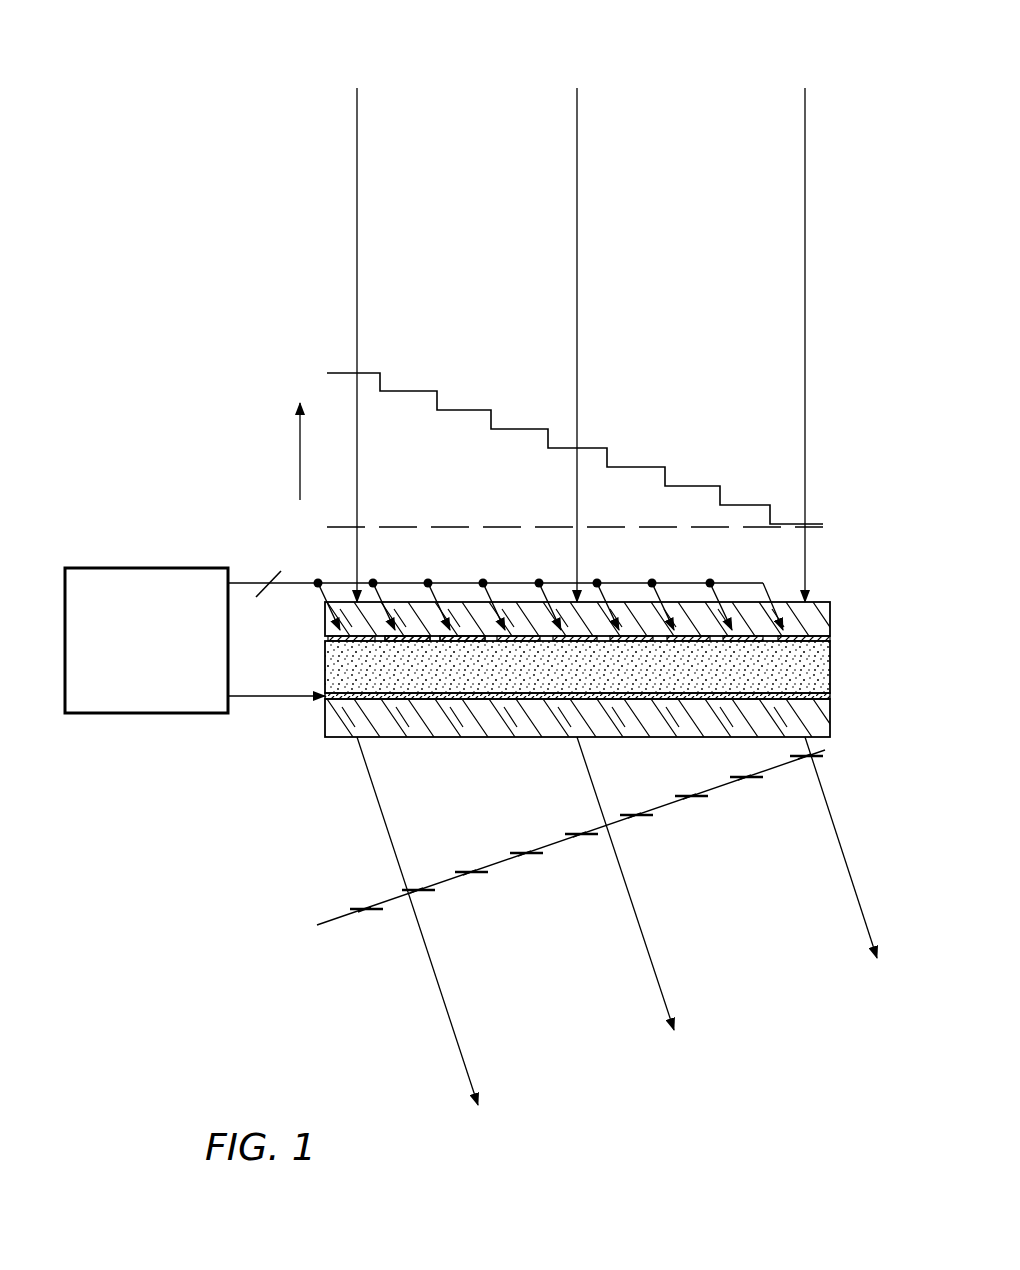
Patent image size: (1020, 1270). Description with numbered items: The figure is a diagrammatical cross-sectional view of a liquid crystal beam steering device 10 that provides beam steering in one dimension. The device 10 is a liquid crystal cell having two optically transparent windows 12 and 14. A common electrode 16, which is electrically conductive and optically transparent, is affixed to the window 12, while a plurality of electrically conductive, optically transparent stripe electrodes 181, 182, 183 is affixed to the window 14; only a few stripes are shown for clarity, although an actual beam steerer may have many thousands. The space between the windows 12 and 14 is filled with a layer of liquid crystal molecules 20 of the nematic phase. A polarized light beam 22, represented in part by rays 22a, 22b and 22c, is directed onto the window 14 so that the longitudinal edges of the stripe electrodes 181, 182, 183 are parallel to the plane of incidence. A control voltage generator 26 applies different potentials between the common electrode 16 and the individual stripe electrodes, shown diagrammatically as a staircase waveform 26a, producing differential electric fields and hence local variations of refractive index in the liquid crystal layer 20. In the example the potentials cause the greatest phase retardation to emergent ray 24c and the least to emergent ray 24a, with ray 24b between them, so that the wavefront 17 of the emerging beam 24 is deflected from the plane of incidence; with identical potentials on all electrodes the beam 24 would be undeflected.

The liquid crystal beam steering device 10 is at (880, 600).
The window 12 is at (832, 722).
The window 14 is at (832, 618).
The common electrode 16 is at (832, 696).
The wavefront 17 is at (500, 862).
The electrode 181 is at (340, 643).
The electrode 182 is at (398, 643).
The electrode 183 is at (457, 643).
The layer of liquid crystal molecules 20 is at (832, 663).
The light beam 22 is at (815, 88).
The ray 22a is at (357, 180).
The ray 22b is at (577, 180).
The ray 22c is at (805, 180).
The beam 24 is at (899, 965).
The emergent ray 24a is at (437, 988).
The emergent ray 24b is at (637, 910).
The emergent ray 24c is at (836, 833).
The control voltage generator 26 is at (157, 568).
The staircase waveform 26a is at (512, 430).